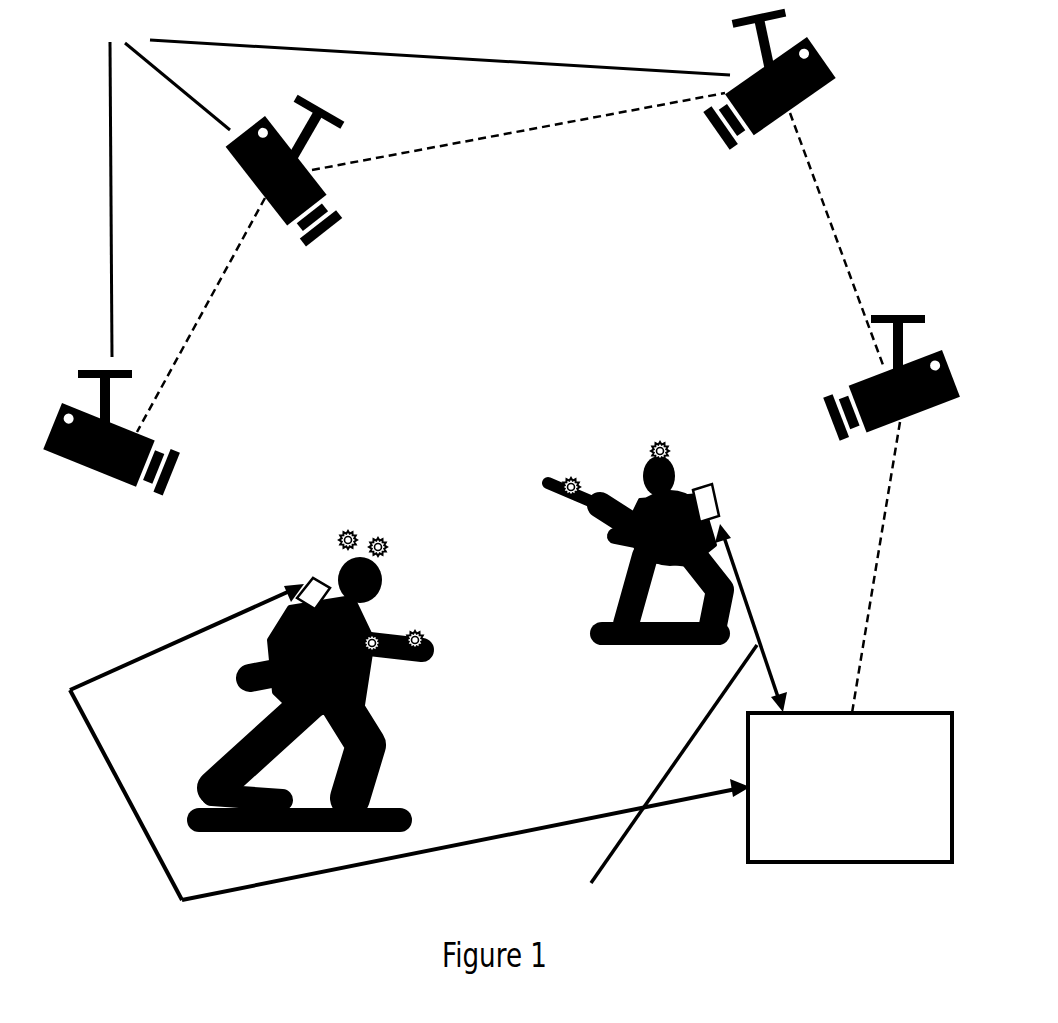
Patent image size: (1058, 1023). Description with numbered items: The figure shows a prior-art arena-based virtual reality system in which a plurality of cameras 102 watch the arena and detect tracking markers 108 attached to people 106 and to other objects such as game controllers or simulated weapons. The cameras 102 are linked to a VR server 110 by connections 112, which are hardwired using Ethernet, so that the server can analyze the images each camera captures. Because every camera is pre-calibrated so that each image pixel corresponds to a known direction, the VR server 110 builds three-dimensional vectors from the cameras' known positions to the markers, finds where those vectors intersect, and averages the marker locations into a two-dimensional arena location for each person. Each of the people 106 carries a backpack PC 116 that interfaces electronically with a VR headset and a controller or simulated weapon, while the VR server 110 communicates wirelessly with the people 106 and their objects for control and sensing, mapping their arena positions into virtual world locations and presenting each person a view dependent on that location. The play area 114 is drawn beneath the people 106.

The cameras 102 is at (167, 432).
The people 106 is at (652, 652).
The tracking markers 108 is at (647, 442).
The VR server 110 is at (840, 872).
The connections 112 is at (622, 122).
The play area platform 114 is at (603, 825).
The backpack PC 116 is at (307, 580).